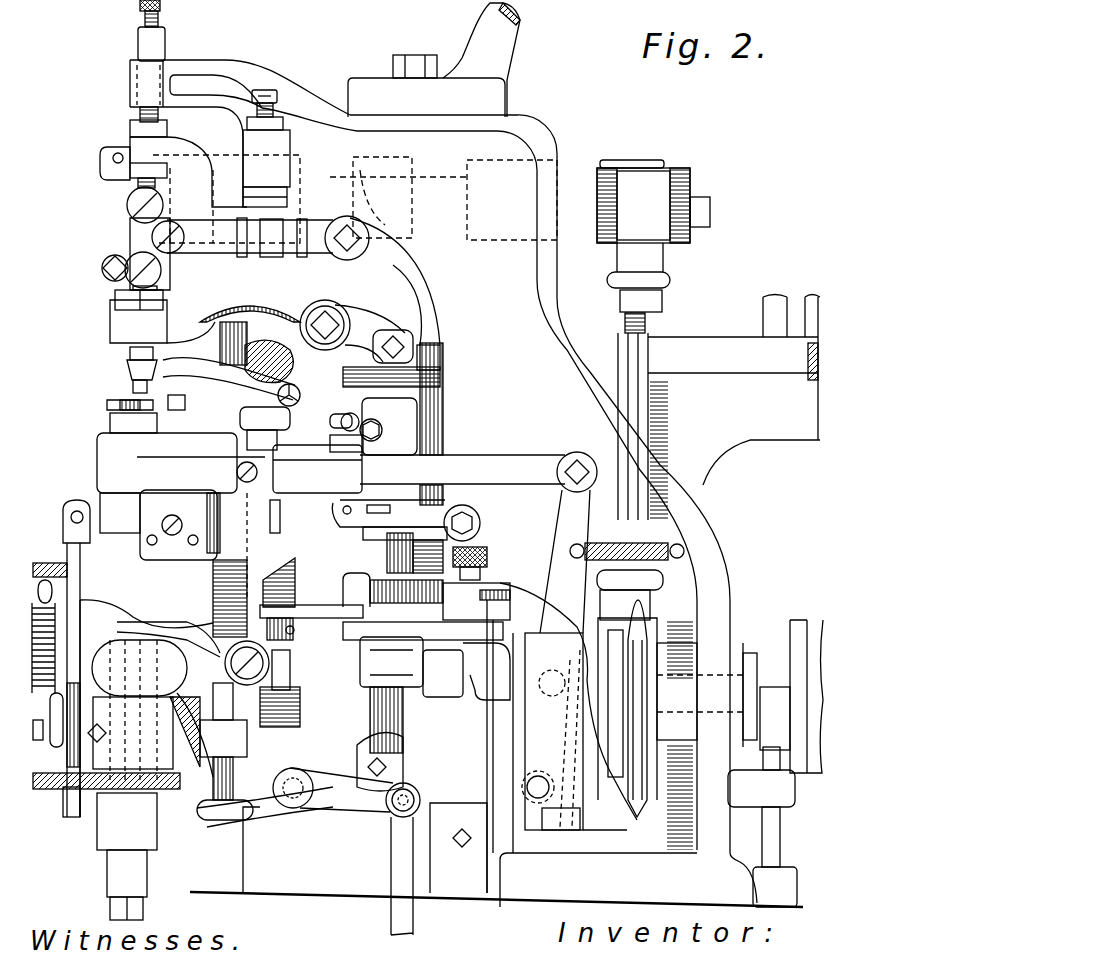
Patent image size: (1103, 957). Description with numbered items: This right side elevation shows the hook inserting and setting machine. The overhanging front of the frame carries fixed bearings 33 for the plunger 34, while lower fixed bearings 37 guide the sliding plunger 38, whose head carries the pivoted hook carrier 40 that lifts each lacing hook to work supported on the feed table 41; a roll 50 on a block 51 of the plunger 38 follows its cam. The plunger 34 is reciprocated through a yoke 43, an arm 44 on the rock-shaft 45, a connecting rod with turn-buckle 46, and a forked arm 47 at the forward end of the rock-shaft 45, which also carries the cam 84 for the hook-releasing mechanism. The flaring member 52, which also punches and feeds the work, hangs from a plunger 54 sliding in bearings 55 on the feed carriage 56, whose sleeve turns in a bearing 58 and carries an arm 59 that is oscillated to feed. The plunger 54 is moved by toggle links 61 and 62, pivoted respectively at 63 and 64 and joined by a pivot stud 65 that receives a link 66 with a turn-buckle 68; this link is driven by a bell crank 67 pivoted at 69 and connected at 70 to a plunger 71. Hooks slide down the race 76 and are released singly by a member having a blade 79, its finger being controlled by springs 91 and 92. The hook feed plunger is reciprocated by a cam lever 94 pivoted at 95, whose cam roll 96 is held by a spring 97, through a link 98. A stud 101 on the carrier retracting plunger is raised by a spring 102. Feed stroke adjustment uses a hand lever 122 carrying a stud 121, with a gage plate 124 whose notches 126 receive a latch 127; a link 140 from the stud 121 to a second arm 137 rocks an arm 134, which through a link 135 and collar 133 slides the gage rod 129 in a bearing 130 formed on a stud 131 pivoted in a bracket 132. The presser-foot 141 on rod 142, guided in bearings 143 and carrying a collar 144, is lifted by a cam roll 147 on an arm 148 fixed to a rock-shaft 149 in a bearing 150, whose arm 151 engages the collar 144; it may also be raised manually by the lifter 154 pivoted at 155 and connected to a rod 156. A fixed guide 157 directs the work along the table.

The plunger 34 is at (140, 42).
The fixed bearings 33 is at (182, 62).
The forked arm 47 is at (200, 166).
The pivot 63 is at (130, 200).
The pivot stud 65 is at (176, 222).
The toggle link 61 is at (140, 232).
The toggle link 62 is at (160, 260).
The pivot 64 is at (150, 286).
The link or connecting rod 66 is at (230, 255).
The turn-buckle 68 is at (272, 250).
The bell crank 67 is at (345, 260).
The plunger 54 is at (118, 298).
The bearings 55 is at (135, 325).
The flaring member 52 is at (130, 390).
The race 76 is at (222, 345).
The blade 79 is at (263, 356).
The spring 92 is at (278, 359).
The pivot 69 is at (325, 325).
The pivot 70 is at (390, 338).
The feed carriage 56 is at (428, 283).
The plunger 71 is at (432, 355).
The spring 91 is at (350, 380).
The bearing 58 is at (443, 440).
The rod 129 is at (358, 420).
The collar 133 is at (388, 426).
The link 135 is at (362, 460).
The link 98 is at (478, 472).
The cam lever 94 is at (568, 500).
The spring 97 is at (595, 540).
The cam roll 96 is at (576, 731).
The pivot 95 is at (554, 785).
The yoke 43 is at (633, 818).
The turn-buckle 46 is at (650, 355).
The arm 44 is at (643, 170).
The rock-shaft 45 is at (445, 220).
The cam 84 is at (415, 170).
The roll 50 is at (718, 518).
The fixed guide 157 is at (189, 392).
The presser-foot 141 is at (107, 402).
The feed table 41 is at (110, 423).
The bearing 130 is at (193, 450).
The bracket 132 is at (182, 495).
The stud 131 is at (246, 500).
The arm 134 is at (316, 489).
The bearings 143 is at (207, 623).
The carrier 40 is at (73, 470).
The second arm 137 is at (335, 520).
The link 140 is at (363, 538).
The stud 121 is at (387, 562).
The arm 59 is at (450, 510).
The gage plate 124 is at (298, 606).
The notches 126 is at (293, 624).
The vertically movable rod 142 is at (213, 573).
The spring actuated latch 127 is at (150, 628).
The spring 102 is at (56, 625).
The stud 101 is at (58, 740).
The block 51 is at (411, 708).
The fixed bearings 37 is at (100, 833).
The sliding plunger 38 is at (120, 878).
The hand lever 122 is at (225, 663).
The arm 151 is at (285, 670).
The collar 144 is at (233, 700).
The bearing 150 is at (290, 709).
The arm 148 is at (371, 662).
The cam roll 147 is at (420, 667).
The rock-shaft 149 is at (405, 770).
The pivot 155 is at (346, 799).
The rod 156 is at (391, 875).
The lifting member 154 is at (218, 828).